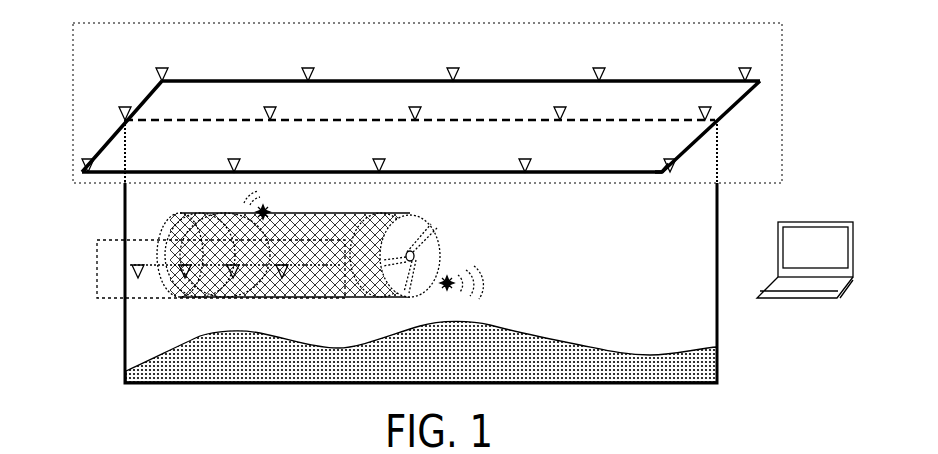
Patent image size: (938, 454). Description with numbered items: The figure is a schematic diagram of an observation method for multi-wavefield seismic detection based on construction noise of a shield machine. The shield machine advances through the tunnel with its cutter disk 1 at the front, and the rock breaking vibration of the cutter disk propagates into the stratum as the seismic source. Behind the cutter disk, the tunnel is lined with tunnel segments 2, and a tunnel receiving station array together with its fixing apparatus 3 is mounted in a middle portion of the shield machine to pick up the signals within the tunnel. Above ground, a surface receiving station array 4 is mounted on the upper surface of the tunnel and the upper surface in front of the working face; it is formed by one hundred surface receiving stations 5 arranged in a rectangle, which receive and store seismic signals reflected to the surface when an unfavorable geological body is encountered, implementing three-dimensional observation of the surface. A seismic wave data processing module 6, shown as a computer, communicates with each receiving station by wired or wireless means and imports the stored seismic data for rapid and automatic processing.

The cutter disk 1 is at (274, 212).
The tunnel segment 2 is at (186, 291).
The fixing apparatus 3 is at (286, 302).
The surface receiving station array 4 is at (88, 193).
The surface receiving station 5 is at (672, 173).
The seismic wave data processing module 6 is at (797, 310).